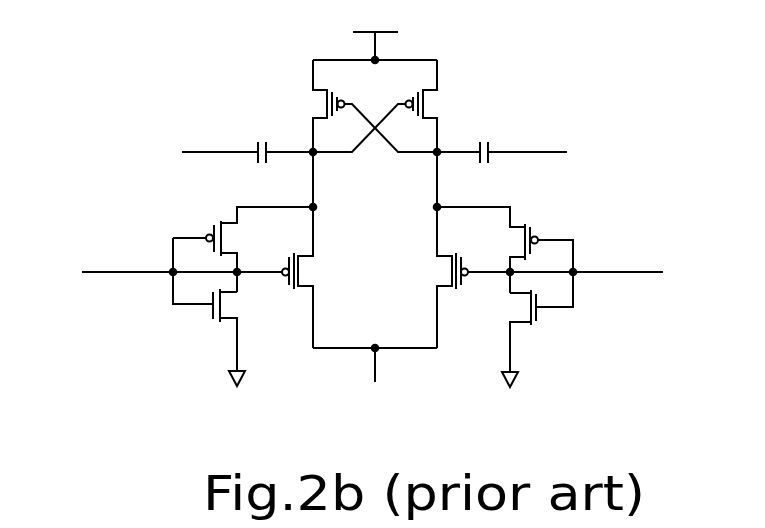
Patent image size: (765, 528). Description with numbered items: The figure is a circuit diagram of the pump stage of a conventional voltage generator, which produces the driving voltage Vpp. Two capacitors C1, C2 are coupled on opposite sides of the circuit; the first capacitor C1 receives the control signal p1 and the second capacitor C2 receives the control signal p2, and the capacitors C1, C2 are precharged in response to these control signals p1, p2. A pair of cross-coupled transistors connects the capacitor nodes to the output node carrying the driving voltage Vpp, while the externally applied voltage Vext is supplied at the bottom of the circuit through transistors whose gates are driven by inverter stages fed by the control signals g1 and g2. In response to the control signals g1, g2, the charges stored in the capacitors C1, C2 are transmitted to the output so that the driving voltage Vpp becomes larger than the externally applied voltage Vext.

The capacitor C1 is at (281, 136).
The capacitor C2 is at (466, 136).
The driving voltage Vpp is at (375, 35).
The externally applied voltage Vext is at (371, 376).
The control signal p1 is at (205, 149).
The control signal p2 is at (542, 149).
The control signal g1 is at (114, 271).
The control signal g2 is at (634, 272).